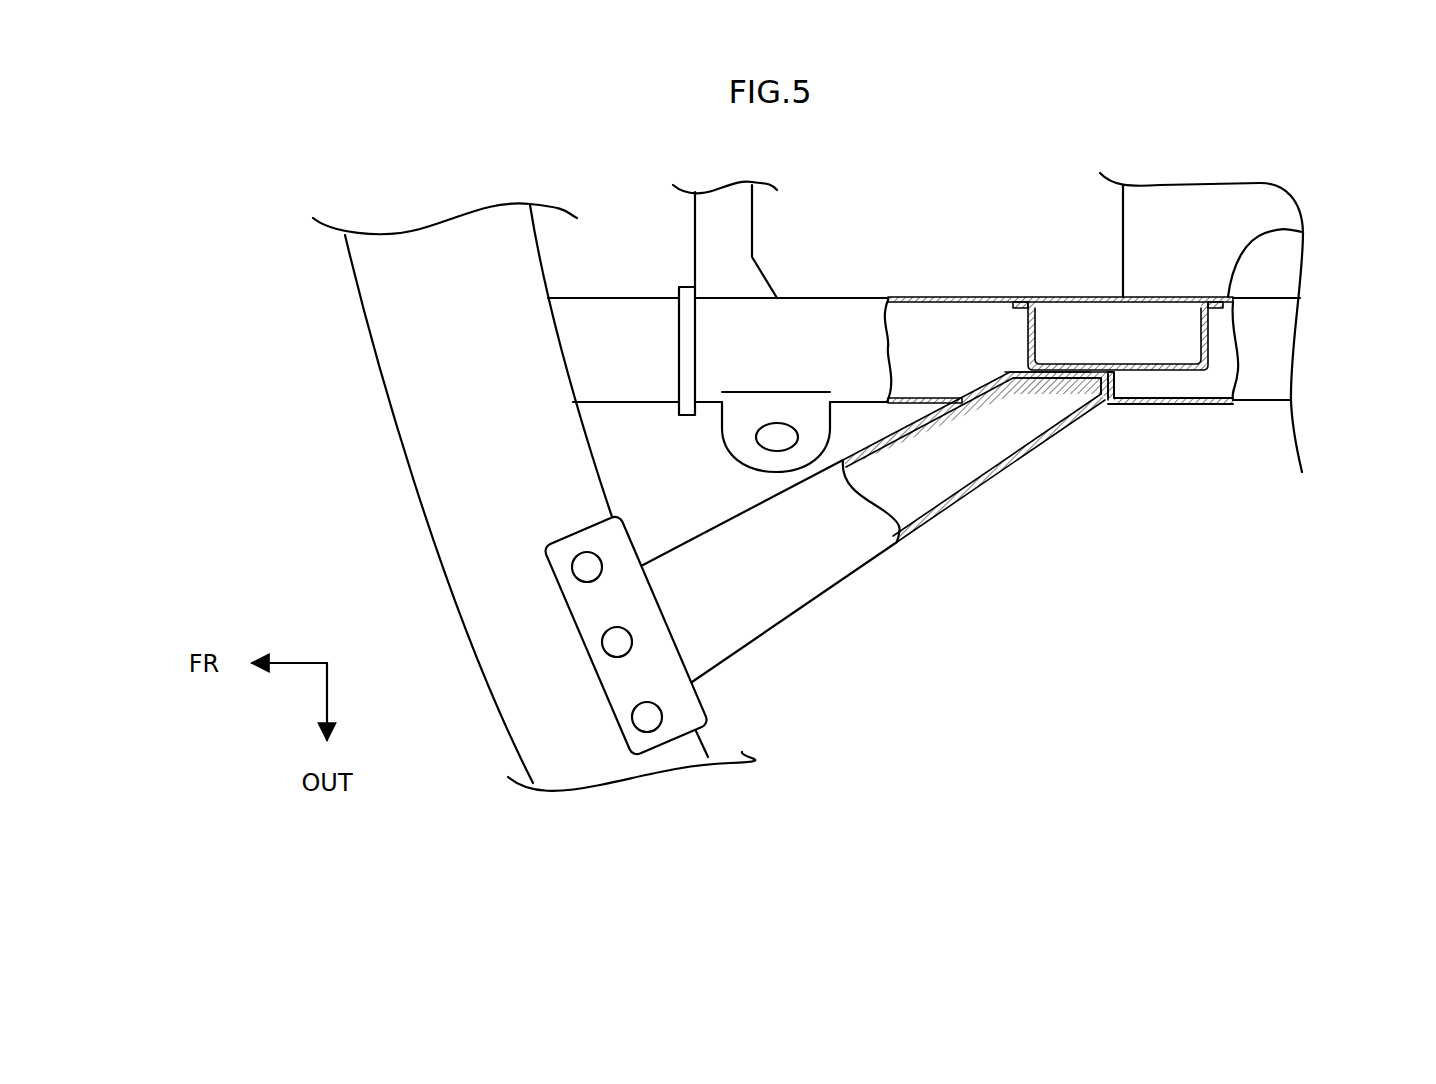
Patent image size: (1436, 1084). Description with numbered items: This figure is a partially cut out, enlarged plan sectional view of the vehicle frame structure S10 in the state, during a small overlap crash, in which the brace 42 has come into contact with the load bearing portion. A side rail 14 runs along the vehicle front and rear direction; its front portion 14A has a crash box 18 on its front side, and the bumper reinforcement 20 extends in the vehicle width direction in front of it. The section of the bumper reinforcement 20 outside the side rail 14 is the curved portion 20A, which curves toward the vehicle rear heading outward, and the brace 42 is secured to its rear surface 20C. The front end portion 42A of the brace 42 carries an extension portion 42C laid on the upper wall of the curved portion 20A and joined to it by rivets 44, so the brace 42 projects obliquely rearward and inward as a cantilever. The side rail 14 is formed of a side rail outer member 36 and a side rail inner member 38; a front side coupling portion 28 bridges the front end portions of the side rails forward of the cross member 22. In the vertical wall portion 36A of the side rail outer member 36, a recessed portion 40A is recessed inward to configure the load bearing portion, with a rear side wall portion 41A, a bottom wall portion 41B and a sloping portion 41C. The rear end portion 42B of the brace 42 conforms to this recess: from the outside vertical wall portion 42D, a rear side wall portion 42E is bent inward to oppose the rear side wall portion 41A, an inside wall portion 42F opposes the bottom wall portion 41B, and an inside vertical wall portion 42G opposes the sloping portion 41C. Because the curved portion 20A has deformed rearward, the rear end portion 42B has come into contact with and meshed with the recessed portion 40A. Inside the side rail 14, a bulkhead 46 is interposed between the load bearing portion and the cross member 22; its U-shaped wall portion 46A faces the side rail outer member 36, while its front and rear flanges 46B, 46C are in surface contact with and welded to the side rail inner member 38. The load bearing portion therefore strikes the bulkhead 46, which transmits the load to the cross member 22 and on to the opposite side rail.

The side rail 14 is at (732, 304).
The front portion 14A is at (818, 312).
The crash box 18 is at (628, 316).
The bumper reinforcement 20 is at (535, 496).
The curved portion 20A is at (517, 682).
The rear surface 20C is at (710, 744).
The cross member 22 is at (1130, 223).
The front side coupling portion 28 is at (745, 210).
The side rail outer member 36 is at (1199, 453).
The vertical wall portion 36A is at (1157, 407).
The side rail inner member 38 is at (968, 297).
The recessed portion 40A is at (1038, 388).
The rear side wall portion 41A is at (1103, 392).
The bottom wall portion 41B is at (1087, 366).
The sloping portion 41C is at (1003, 373).
The brace 42 is at (786, 544).
The front end portion 42A is at (707, 660).
The rear end portion 42B is at (1093, 383).
The extension portion 42C is at (588, 600).
The outside vertical wall portion 42D is at (1000, 397).
The rear side wall portion 42E is at (1113, 394).
The inside wall portion 42F is at (1067, 384).
The inside vertical wall portion 42G is at (985, 396).
The rivet 44 is at (648, 715).
The bulkhead 46 is at (1142, 401).
The wall portion 46A is at (1185, 374).
The front flange 46B is at (1017, 312).
The rear flange 46C is at (1215, 318).
The vehicle frame structure S10 is at (872, 657).